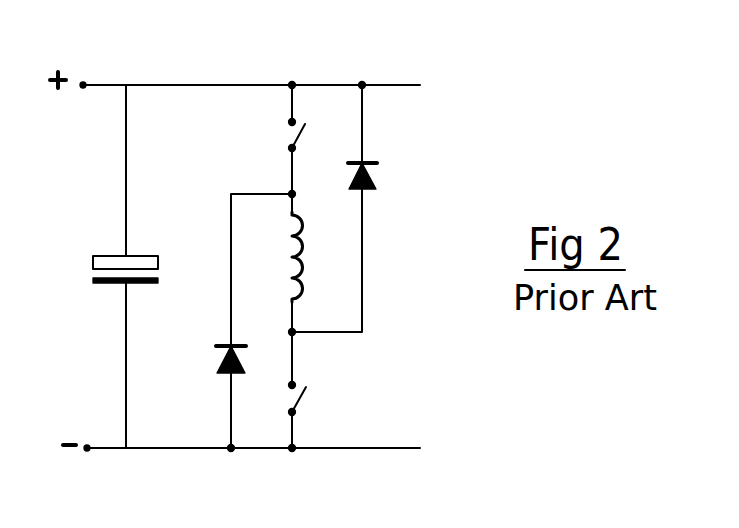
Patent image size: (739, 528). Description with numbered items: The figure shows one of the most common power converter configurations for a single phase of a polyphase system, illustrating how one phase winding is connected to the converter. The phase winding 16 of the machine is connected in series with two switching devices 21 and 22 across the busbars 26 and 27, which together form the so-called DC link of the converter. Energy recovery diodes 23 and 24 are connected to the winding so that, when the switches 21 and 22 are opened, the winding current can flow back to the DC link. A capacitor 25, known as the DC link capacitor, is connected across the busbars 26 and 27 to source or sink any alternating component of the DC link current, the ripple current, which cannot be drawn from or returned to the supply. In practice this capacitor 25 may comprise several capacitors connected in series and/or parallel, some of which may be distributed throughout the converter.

The phase winding 16 is at (308, 238).
The switching device 21 is at (285, 138).
The switching device 22 is at (310, 397).
The energy recovery diode 23 is at (383, 174).
The energy recovery diode 24 is at (213, 350).
The capacitor 25 is at (88, 272).
The busbar 26 is at (202, 85).
The busbar 27 is at (186, 450).